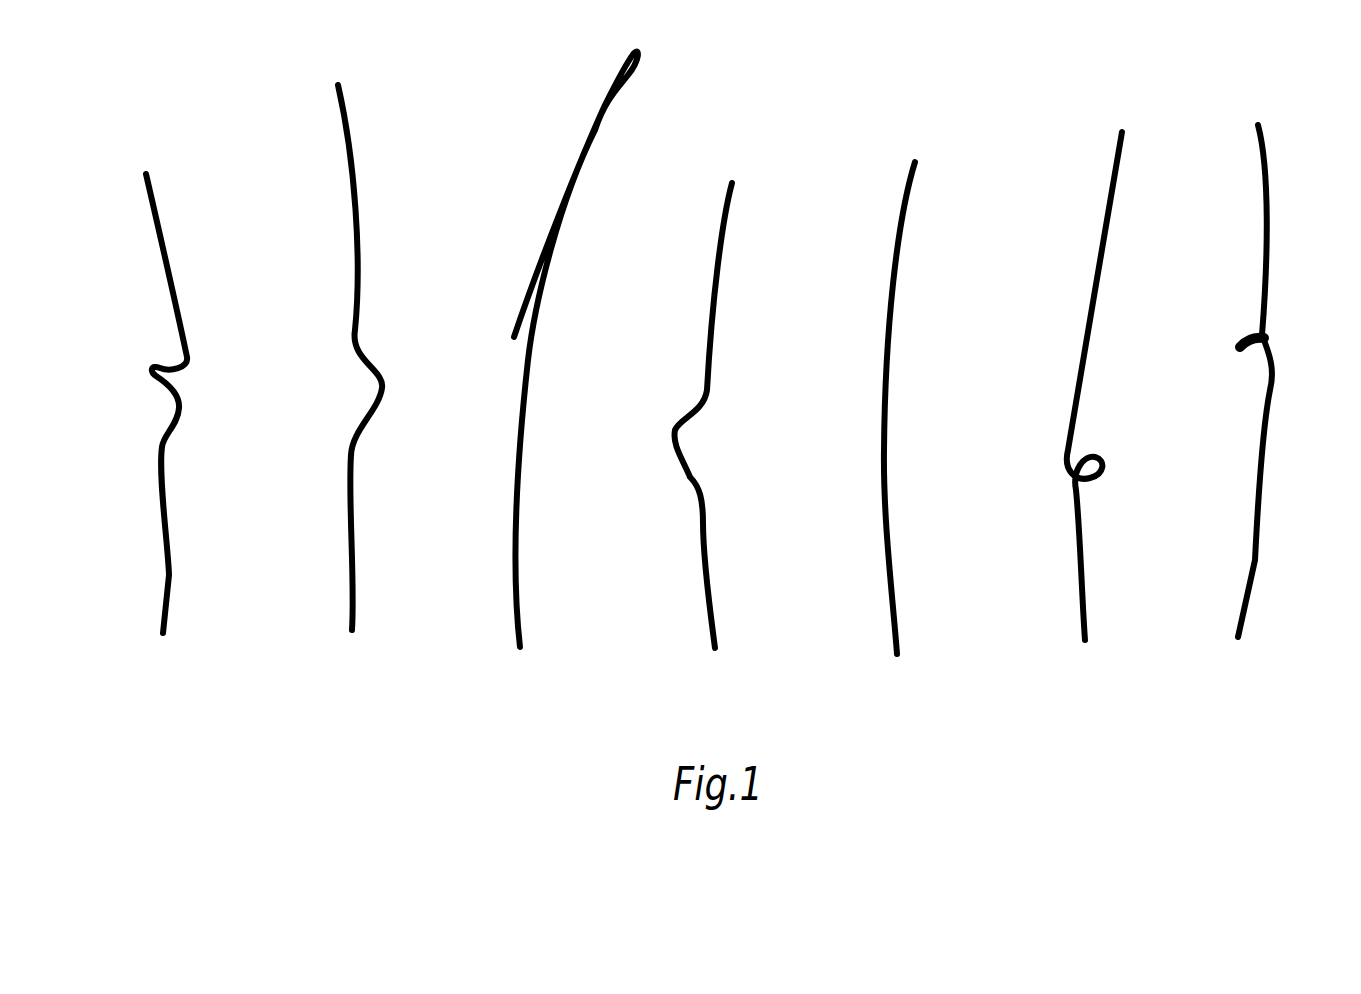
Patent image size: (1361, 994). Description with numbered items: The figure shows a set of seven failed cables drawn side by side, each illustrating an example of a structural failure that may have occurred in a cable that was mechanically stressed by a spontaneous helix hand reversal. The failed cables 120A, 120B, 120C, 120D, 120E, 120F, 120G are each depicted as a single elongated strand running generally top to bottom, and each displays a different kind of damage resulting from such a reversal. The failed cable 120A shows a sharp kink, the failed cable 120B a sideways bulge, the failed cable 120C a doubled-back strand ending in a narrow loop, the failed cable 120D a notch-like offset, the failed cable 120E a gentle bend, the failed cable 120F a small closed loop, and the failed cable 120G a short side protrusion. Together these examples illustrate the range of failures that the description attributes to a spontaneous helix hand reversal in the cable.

The failed cable 120A is at (174, 515).
The failed cable 120B is at (358, 518).
The failed cable 120C is at (517, 510).
The failed cable 120D is at (706, 535).
The failed cable 120E is at (890, 528).
The failed cable 120F is at (1082, 540).
The failed cable 120G is at (1262, 508).